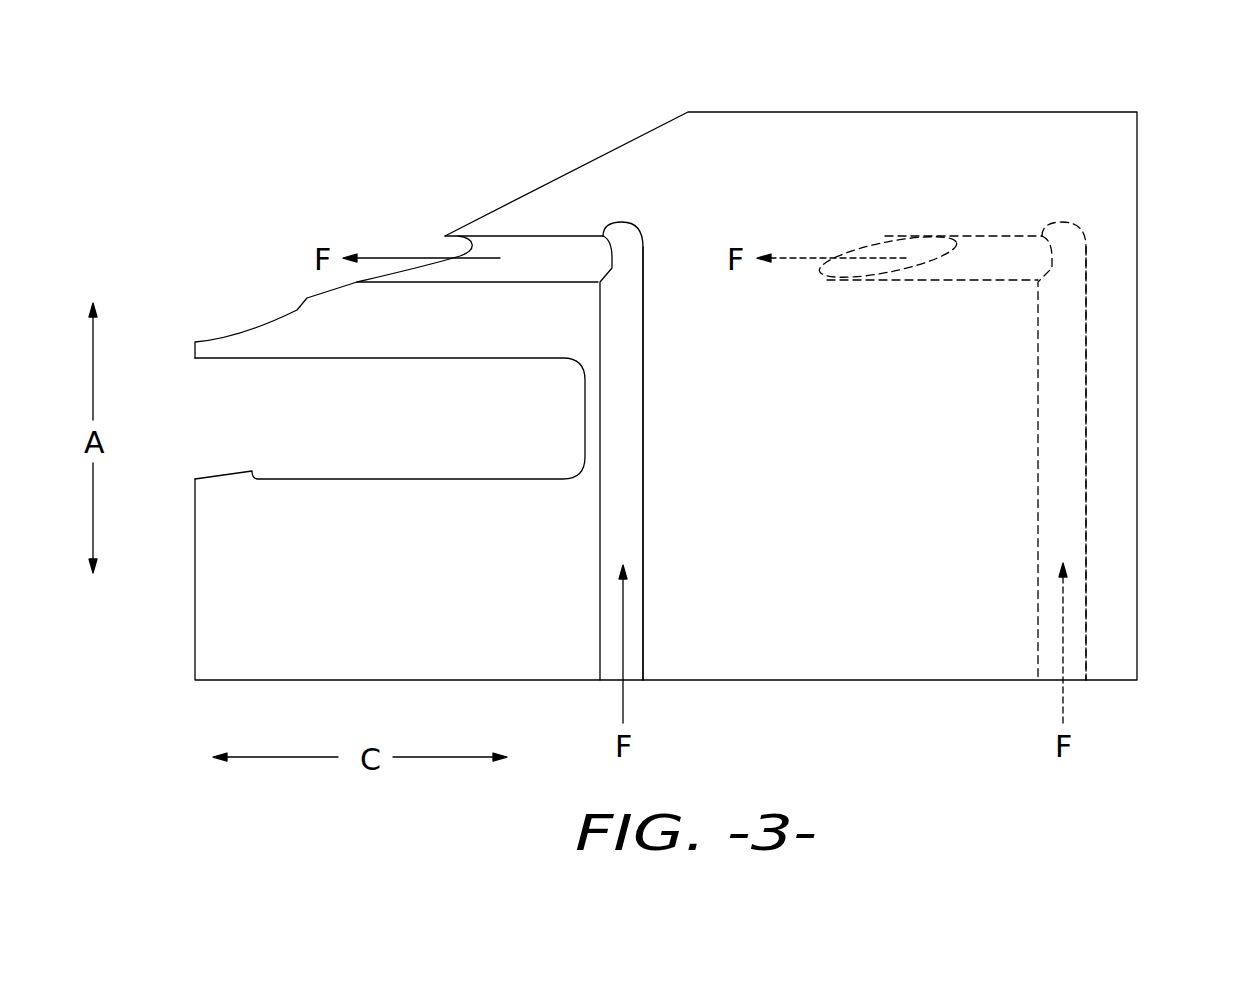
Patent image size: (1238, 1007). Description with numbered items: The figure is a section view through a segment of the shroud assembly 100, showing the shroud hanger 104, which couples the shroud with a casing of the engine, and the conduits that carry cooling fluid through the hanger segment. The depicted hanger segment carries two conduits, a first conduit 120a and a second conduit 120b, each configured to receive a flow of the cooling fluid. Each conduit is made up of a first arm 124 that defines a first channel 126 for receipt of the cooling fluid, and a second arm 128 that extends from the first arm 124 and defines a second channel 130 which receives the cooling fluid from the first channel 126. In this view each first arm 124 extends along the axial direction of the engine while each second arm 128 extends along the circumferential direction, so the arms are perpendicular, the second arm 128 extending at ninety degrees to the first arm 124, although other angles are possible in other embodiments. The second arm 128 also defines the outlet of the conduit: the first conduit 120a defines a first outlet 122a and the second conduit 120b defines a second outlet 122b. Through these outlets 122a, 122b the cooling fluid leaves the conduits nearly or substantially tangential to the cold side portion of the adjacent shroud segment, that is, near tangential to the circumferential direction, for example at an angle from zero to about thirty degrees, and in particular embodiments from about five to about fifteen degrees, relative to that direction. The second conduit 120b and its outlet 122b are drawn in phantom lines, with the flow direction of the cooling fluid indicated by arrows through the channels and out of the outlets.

The shroud assembly 100 is at (345, 120).
The shroud hanger 104 is at (295, 340).
The first conduit 120a is at (610, 205).
The second conduit 120b is at (983, 173).
The first outlet 122a is at (410, 245).
The second outlet 122b is at (894, 250).
The first arm 124 is at (600, 392).
The first channel 126 is at (630, 398).
The second arm 128 is at (497, 231).
The second channel 130 is at (518, 251).